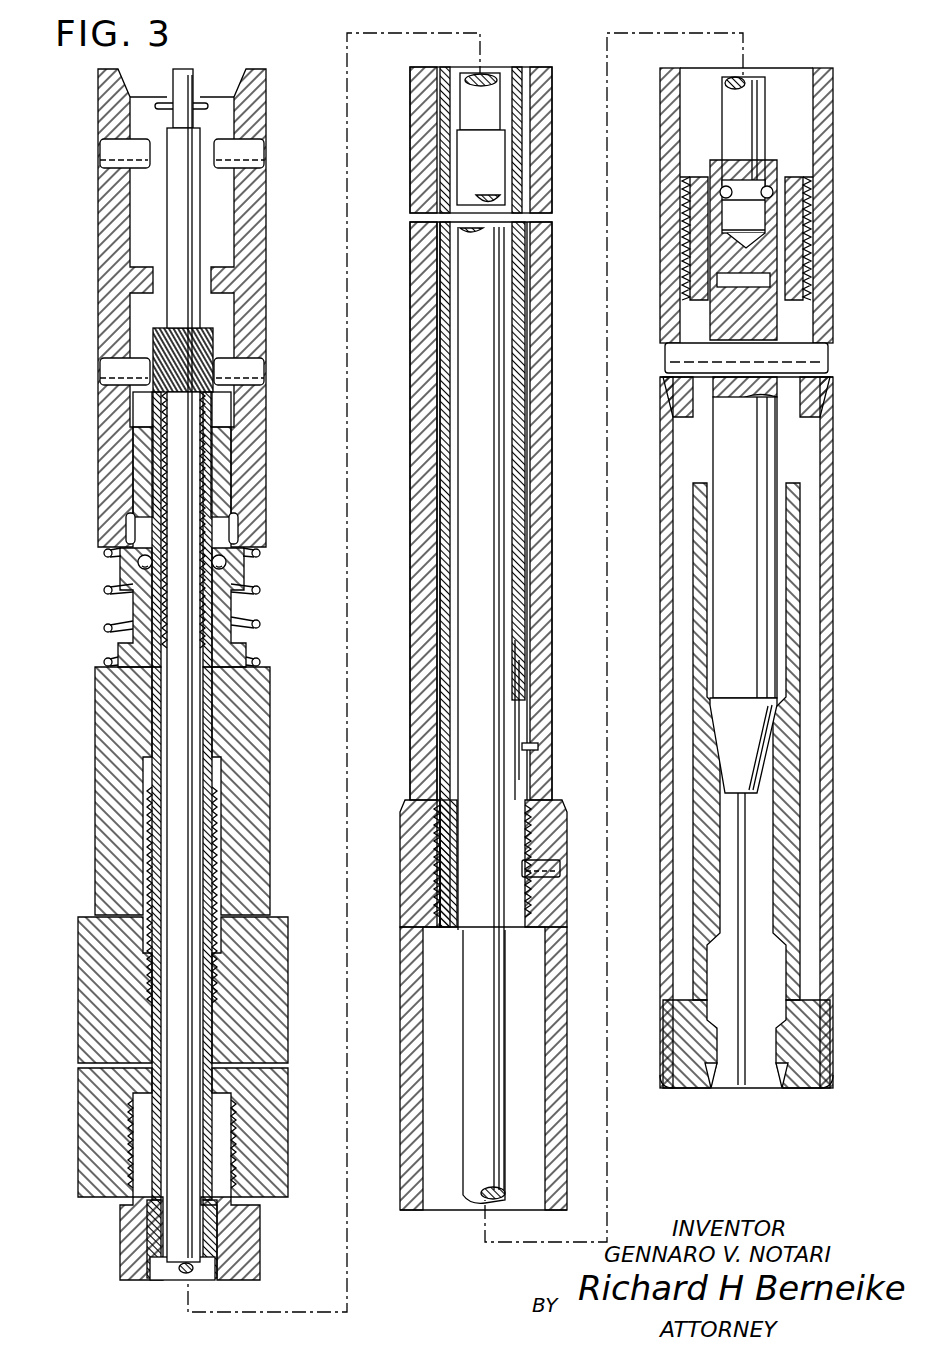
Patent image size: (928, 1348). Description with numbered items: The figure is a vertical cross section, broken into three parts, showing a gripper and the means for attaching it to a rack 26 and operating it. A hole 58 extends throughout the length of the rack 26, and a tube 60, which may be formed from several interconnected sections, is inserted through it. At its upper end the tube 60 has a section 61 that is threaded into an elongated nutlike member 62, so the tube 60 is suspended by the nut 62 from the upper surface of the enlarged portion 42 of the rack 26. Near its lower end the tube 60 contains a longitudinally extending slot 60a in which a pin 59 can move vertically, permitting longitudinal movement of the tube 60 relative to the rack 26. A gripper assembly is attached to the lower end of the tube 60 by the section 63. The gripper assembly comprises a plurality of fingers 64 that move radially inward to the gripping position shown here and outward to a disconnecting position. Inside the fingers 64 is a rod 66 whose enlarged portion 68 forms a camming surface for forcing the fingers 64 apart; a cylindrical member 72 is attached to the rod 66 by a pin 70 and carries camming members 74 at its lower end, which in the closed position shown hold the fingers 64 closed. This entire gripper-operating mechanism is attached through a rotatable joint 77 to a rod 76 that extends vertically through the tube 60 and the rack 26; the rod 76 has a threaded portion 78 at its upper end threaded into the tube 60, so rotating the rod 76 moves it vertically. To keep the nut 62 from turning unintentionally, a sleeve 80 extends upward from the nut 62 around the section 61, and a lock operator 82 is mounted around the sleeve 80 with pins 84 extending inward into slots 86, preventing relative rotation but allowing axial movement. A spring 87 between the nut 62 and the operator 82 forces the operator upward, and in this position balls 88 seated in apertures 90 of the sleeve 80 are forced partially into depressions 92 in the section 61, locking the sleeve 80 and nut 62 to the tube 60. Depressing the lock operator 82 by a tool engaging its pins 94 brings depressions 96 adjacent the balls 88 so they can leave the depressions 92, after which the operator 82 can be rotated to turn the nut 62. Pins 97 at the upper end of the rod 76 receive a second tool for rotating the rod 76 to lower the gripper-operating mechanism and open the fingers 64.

The rack 26 is at (248, 1240).
The enlarged portion 42 is at (96, 1124).
The hole 58 is at (156, 1230).
The pin 59 is at (527, 753).
The tube 60 is at (186, 1266).
The slot 60a is at (518, 697).
The section 61 is at (158, 890).
The nutlike member 62 is at (110, 793).
The section 63 is at (412, 1060).
The fingers 64 is at (781, 872).
The rod 66 is at (756, 568).
The enlarged portion 68 is at (742, 722).
The pin 70 is at (803, 356).
The cylindrical member 72 is at (826, 447).
The camming members 74 is at (812, 1040).
The rod 76 is at (175, 232).
The rotatable joint 77 is at (786, 165).
The threaded portion 78 is at (176, 343).
The sleeve 80 is at (142, 472).
The lock operator 82 is at (108, 199).
The pins 84 is at (115, 370).
The slots 86 is at (143, 408).
The spring 87 is at (104, 628).
The balls 88 is at (140, 562).
The apertures 90 is at (213, 538).
The depressions 92 is at (236, 525).
The pins 94 is at (106, 152).
The depressions 96 is at (127, 528).
The pins 97 is at (200, 103).